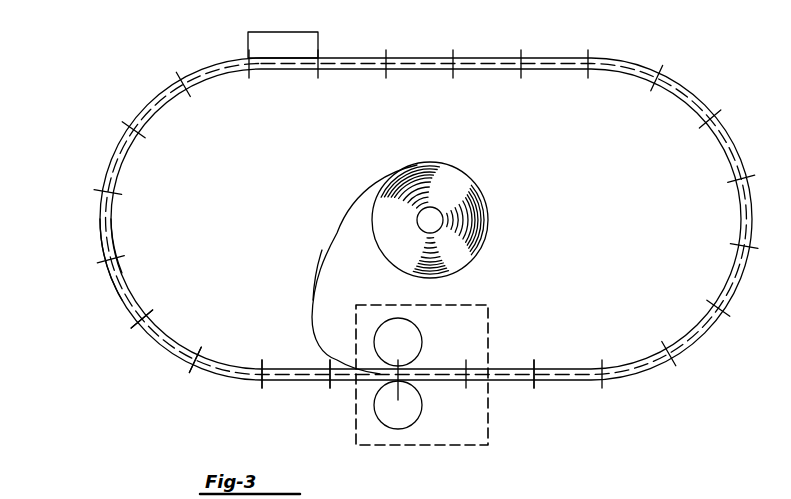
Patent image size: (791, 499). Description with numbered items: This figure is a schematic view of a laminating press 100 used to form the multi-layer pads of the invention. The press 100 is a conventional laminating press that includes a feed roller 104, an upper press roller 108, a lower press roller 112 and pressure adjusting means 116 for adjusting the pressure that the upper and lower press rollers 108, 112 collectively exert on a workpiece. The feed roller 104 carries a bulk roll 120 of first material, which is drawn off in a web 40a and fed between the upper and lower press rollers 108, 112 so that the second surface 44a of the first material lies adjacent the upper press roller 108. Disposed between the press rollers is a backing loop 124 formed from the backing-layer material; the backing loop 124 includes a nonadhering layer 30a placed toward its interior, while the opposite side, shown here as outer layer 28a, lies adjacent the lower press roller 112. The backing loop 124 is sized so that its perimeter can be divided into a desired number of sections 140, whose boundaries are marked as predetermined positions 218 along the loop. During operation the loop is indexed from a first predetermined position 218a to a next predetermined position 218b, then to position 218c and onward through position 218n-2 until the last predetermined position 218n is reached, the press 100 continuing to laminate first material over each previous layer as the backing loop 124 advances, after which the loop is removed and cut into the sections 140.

The press 100 is at (576, 280).
The feed roller 104 is at (483, 185).
The upper press roller 108 is at (423, 331).
The lower press roller 112 is at (424, 403).
The pressure adjusting means 116 is at (488, 308).
The bulk roll 120 is at (450, 173).
The backing loop 124 is at (150, 333).
The sections 140 is at (285, 32).
The predetermined positions 218 is at (247, 54).
The first predetermined position 218a is at (330, 385).
The next predetermined position 218b is at (255, 384).
The predetermined position 218c is at (197, 350).
The last predetermined position 218n is at (397, 388).
The predetermined position 218n-2 is at (534, 385).
The outer rail 28a is at (122, 300).
The nonadhering layer 30a is at (121, 274).
The web loop 40a is at (316, 270).
The second surface 44a is at (327, 248).